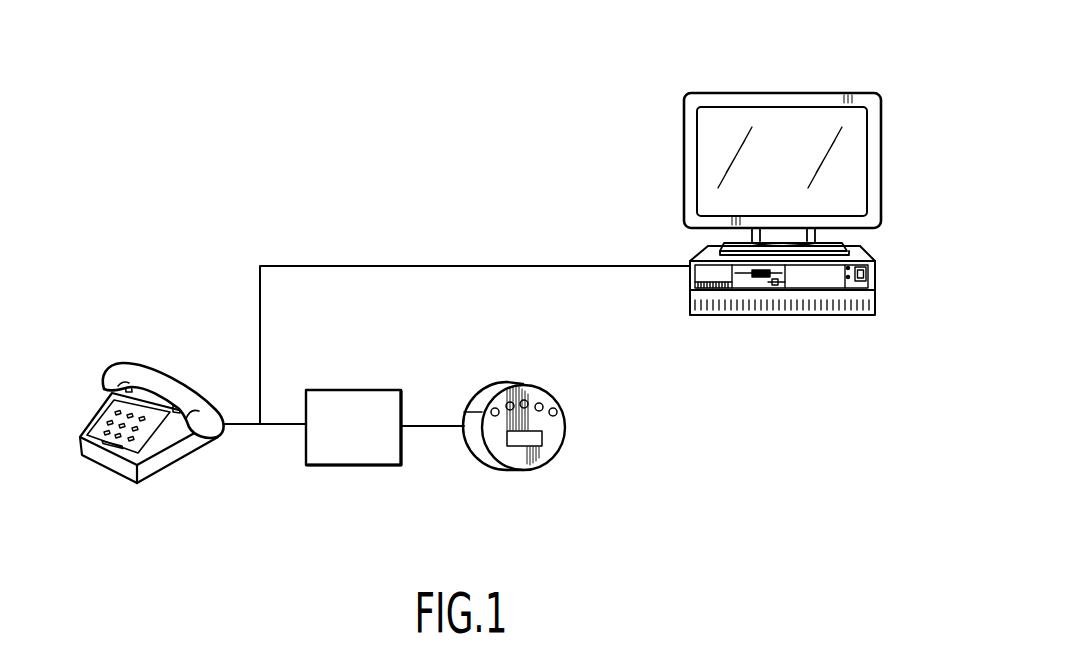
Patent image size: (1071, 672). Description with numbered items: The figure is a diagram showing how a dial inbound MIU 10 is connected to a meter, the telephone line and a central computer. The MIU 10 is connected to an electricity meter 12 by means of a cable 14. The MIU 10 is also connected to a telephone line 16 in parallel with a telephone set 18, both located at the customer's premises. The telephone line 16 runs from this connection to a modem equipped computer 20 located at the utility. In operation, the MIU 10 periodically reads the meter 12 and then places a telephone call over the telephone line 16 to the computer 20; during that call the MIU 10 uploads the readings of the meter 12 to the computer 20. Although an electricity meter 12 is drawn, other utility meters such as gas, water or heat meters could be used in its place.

The dial inbound MIU 10 is at (380, 452).
The electricity meter 12 is at (563, 451).
The cable 14 is at (438, 422).
The telephone line 16 is at (270, 426).
The telephone set 18 is at (200, 452).
The modem equipped computer 20 is at (695, 253).